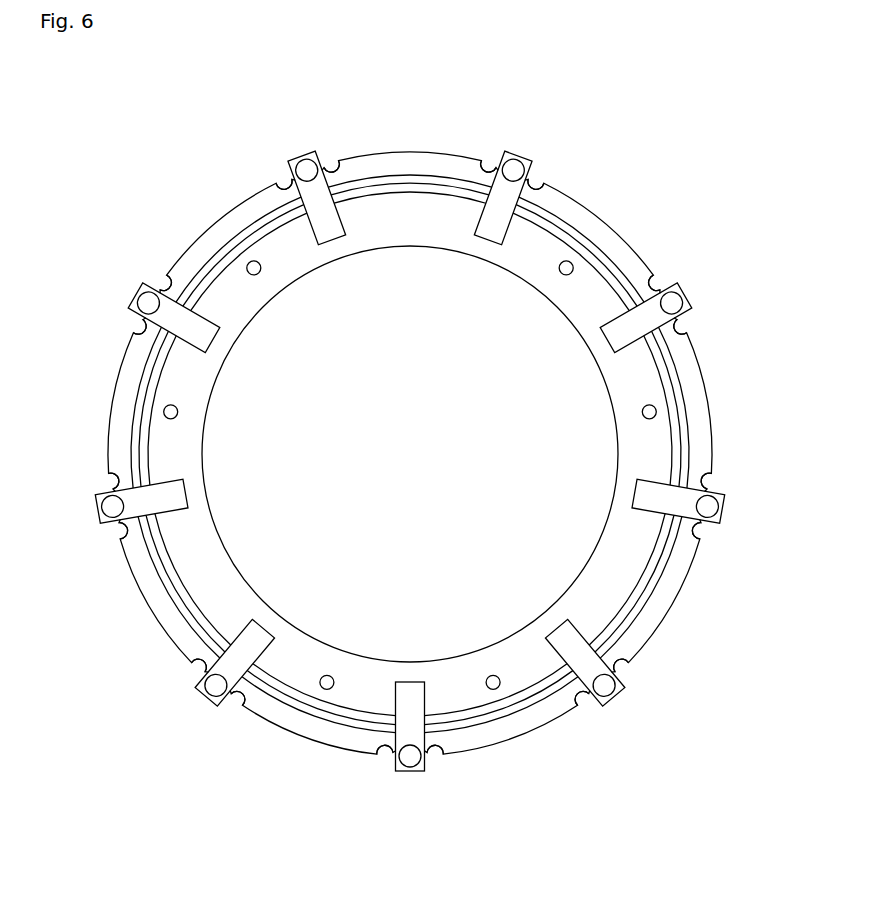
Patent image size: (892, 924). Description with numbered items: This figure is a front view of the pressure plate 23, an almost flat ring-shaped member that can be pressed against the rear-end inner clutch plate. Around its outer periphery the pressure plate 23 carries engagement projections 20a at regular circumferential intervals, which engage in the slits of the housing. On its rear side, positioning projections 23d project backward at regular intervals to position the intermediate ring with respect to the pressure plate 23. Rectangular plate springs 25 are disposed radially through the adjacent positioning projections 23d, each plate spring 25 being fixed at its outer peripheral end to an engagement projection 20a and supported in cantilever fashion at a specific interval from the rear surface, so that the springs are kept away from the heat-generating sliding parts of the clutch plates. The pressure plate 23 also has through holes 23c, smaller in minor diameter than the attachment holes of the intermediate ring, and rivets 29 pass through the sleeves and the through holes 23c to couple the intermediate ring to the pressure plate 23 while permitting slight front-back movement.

The pressure plate 23 is at (586, 178).
The through holes 23c is at (251, 261).
The positioning projections 23d is at (403, 183).
The engagement projection 20a is at (145, 280).
The plate springs 25 is at (200, 340).
The rivets 29 is at (140, 304).